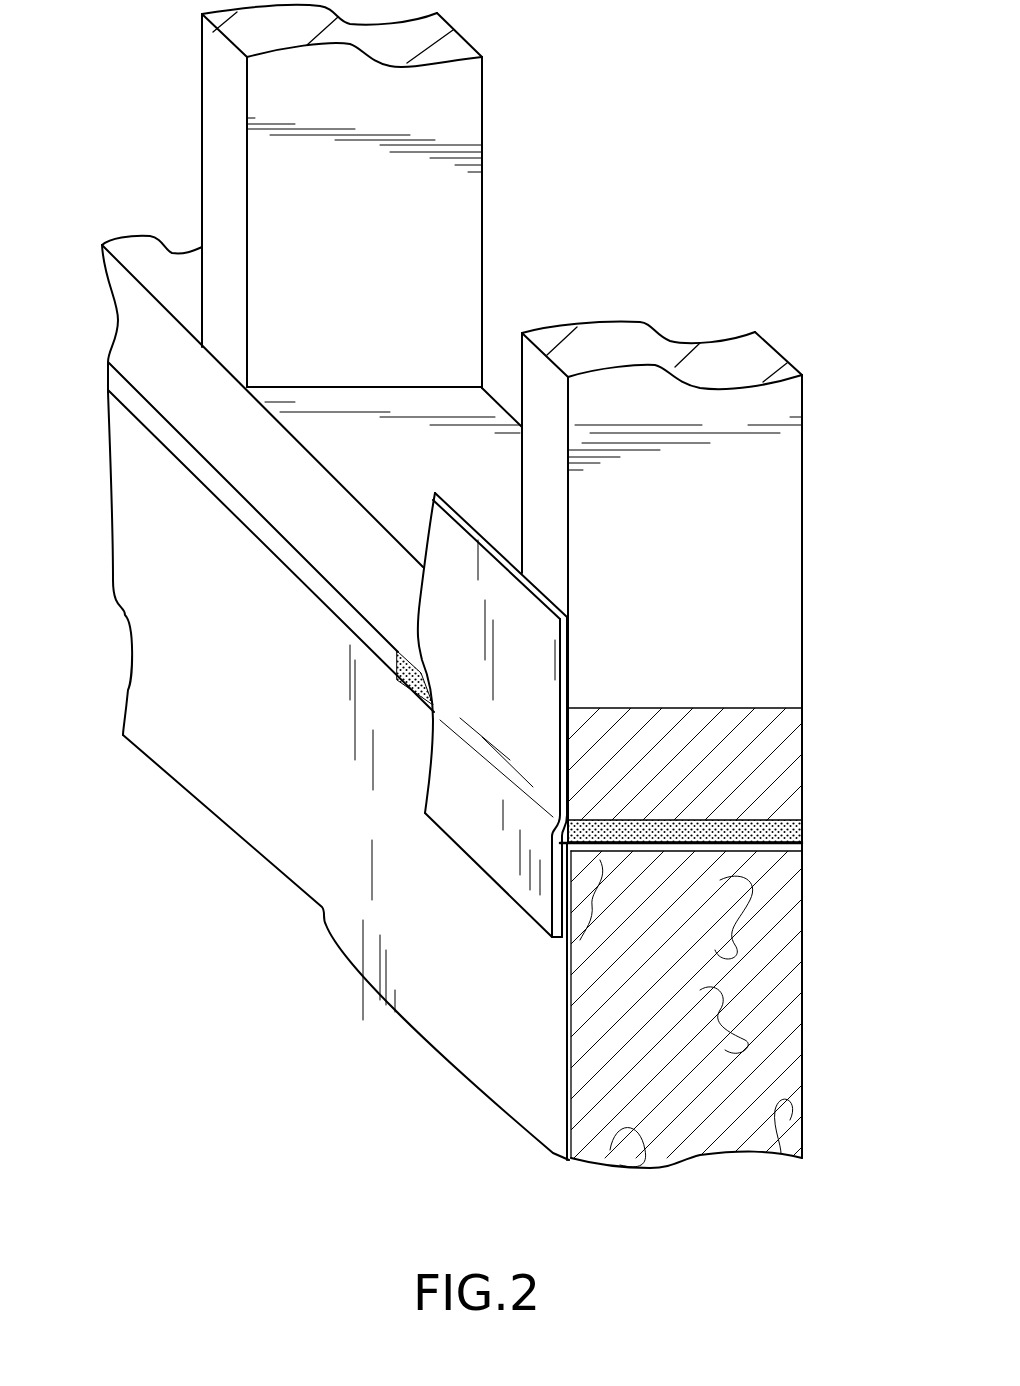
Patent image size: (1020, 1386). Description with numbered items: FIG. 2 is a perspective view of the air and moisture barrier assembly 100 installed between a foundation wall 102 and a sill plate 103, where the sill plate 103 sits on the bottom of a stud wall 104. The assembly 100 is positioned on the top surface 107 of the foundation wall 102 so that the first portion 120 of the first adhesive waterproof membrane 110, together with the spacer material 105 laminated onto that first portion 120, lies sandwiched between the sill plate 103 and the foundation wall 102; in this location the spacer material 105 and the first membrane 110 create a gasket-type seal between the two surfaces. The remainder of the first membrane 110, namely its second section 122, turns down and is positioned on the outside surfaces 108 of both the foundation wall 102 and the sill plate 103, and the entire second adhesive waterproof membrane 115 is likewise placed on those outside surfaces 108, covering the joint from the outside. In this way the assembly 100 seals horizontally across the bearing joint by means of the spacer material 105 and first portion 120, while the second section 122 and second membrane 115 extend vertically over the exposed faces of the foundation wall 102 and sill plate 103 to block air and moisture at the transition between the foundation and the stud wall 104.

The air and moisture barrier assembly 100 is at (481, 903).
The foundation wall 102 is at (775, 970).
The sill plate 103 is at (790, 745).
The stud wall 104 is at (642, 745).
The spacer material 105 is at (768, 829).
The top surface of the foundation wall 107 is at (724, 856).
The outside surfaces 108 is at (121, 347).
The first adhesive waterproof membrane 110 is at (720, 845).
The second adhesive waterproof membrane 115 is at (432, 557).
The first portion of the first membrane 120 is at (650, 852).
The second section of the first membrane 122 is at (583, 895).